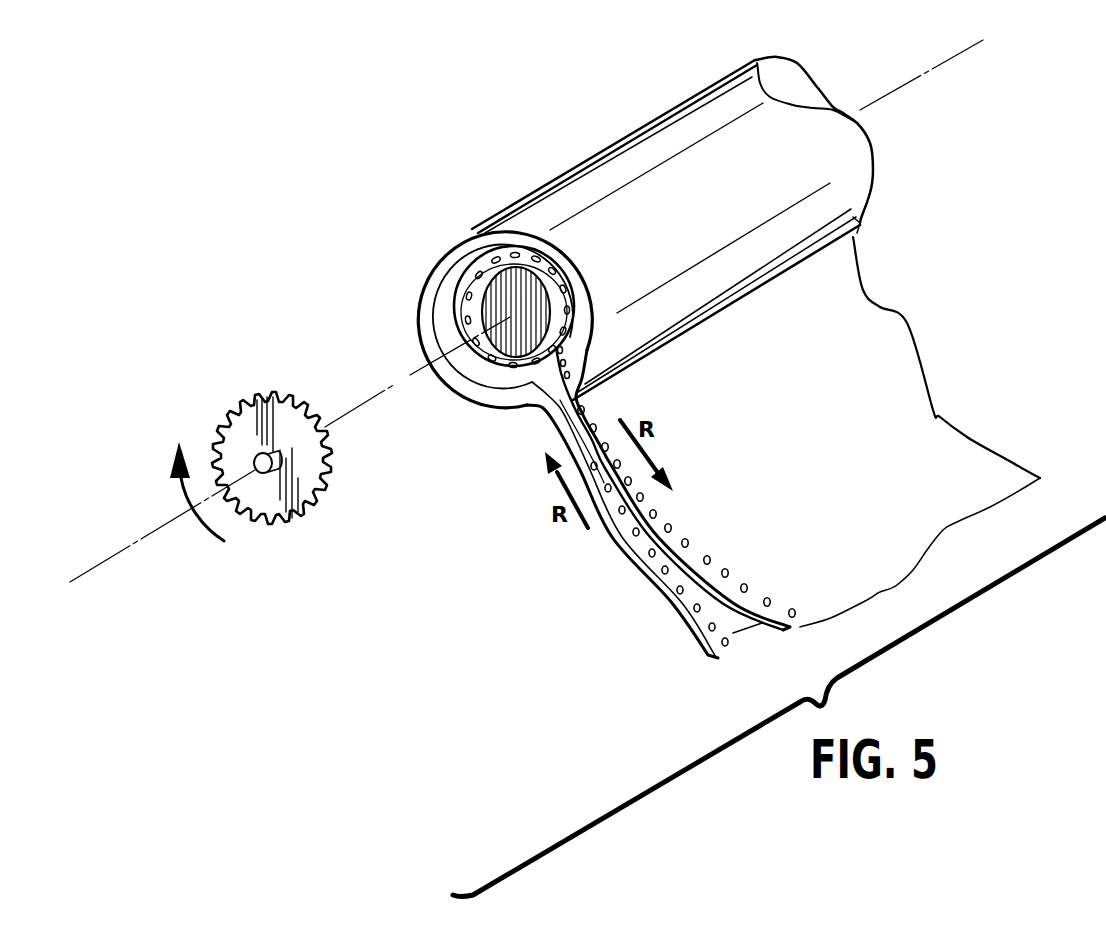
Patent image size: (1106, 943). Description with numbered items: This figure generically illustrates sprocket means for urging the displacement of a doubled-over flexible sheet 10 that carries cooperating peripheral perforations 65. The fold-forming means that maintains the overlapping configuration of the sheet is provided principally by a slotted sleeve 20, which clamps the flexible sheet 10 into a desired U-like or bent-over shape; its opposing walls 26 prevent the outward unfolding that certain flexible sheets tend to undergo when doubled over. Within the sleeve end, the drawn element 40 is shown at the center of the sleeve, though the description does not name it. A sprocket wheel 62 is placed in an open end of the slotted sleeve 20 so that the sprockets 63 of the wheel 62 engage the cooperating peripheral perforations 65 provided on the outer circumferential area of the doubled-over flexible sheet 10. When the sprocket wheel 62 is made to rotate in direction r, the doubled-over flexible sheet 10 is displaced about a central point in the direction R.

The slotted sleeve 20 is at (744, 190).
The core 40 is at (478, 288).
The opposing walls 26 is at (518, 417).
The flexible sheet 10 is at (653, 587).
The peripheral perforations 65 is at (791, 600).
The sprocket wheel 62 is at (280, 520).
The sprockets 63 is at (288, 398).